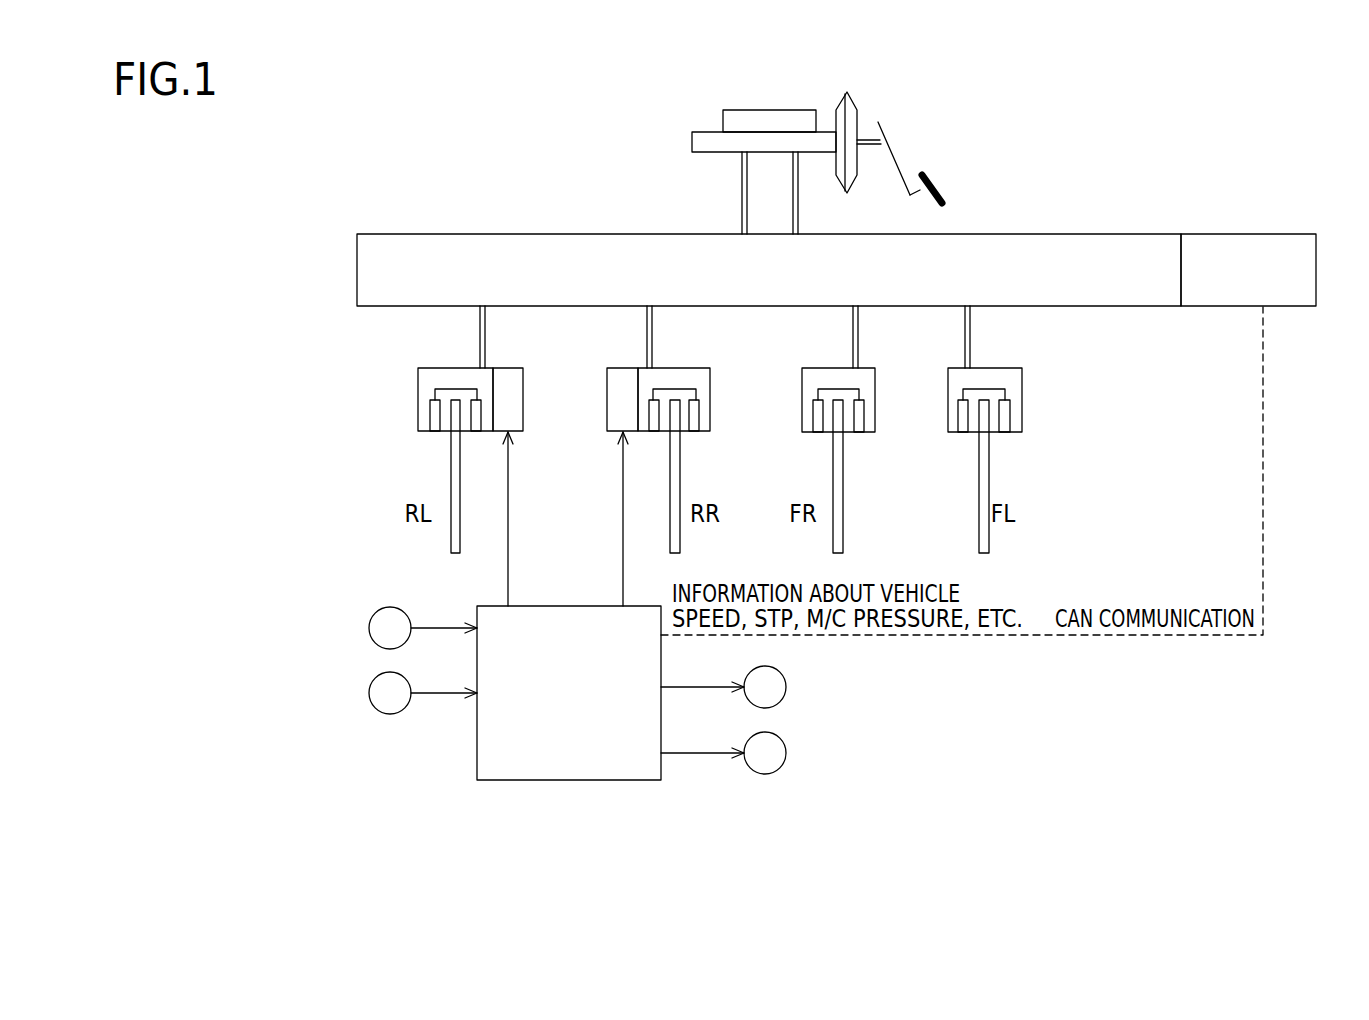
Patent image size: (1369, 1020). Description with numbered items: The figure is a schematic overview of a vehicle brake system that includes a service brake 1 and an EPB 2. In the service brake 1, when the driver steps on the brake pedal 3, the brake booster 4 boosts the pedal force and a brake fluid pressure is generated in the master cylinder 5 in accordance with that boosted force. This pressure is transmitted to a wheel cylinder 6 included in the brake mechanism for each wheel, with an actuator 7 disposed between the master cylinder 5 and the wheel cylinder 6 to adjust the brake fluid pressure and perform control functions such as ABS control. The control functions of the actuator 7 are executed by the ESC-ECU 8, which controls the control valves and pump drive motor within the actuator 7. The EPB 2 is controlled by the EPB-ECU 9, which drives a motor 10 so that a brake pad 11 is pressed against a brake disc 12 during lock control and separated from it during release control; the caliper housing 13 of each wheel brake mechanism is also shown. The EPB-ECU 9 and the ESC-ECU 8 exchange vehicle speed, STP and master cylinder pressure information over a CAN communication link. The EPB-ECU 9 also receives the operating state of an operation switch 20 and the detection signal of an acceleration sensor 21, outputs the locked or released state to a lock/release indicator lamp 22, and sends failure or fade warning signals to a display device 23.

The service brake 1 is at (918, 124).
The EPB 2 is at (565, 429).
The brake pedal 3 is at (927, 180).
The brake booster 4 is at (852, 100).
The master cylinder 5 is at (707, 132).
The wheel cylinder 6 is at (486, 367).
The actuator 7 is at (1040, 234).
The ESC-ECU 8 is at (1276, 234).
The EPB-ECU 9 is at (632, 781).
The motor 10 is at (523, 386).
The brake pad 11 is at (432, 432).
The brake disc 12 is at (451, 489).
The caliper 13 is at (419, 364).
The operation switch 20 is at (372, 615).
The acceleration sensor 21 is at (372, 680).
The lock/release indicator lamp 22 is at (770, 667).
The display device 23 is at (772, 736).